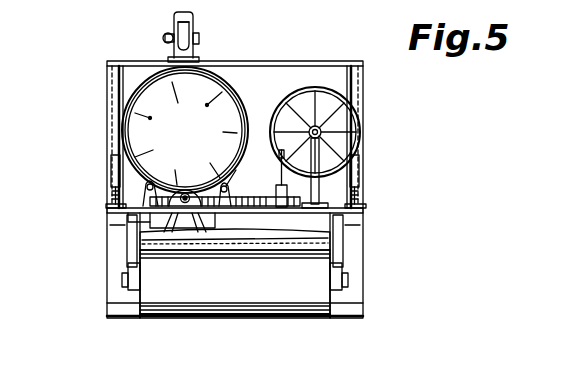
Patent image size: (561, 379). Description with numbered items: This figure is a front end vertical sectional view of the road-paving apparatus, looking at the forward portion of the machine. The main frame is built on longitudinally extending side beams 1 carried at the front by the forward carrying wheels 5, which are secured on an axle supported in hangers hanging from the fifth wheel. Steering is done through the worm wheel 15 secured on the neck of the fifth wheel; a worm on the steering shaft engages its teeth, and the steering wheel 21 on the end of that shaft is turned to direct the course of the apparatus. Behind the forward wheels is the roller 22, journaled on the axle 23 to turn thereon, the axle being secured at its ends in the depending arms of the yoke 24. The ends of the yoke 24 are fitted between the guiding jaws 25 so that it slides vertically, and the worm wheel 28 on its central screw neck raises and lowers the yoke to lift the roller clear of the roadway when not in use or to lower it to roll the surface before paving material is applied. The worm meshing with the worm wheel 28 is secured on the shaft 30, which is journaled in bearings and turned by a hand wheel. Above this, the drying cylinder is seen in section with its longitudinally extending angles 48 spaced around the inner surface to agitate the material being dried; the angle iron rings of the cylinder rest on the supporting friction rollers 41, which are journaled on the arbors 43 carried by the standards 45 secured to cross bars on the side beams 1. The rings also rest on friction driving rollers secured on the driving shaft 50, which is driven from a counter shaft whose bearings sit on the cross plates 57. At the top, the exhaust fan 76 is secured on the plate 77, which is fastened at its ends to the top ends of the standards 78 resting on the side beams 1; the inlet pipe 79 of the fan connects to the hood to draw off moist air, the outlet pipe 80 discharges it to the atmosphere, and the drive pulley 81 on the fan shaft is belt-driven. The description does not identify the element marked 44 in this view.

The side beams 1 is at (112, 197).
The forward carrying wheels 5 is at (112, 312).
The worm wheel 15 is at (297, 200).
The steering wheel 21 is at (361, 133).
The roller 22 is at (303, 320).
The axle 23 is at (122, 285).
The yoke 24 is at (126, 275).
The guiding jaws 25 is at (127, 242).
The worm wheel 28 is at (246, 208).
The shaft 30 is at (225, 194).
The supporting friction rollers 41 is at (230, 196).
The arbors 43 is at (146, 190).
The crank bracket 44 is at (191, 193).
The standards 45 is at (112, 207).
The longitudinally extending angles 48 is at (188, 113).
The driving shaft 50 is at (185, 204).
The cross plates 57 is at (233, 103).
The exhaust fan 76 is at (176, 30).
The plate 77 is at (272, 62).
The standards 78 is at (107, 90).
The inlet pipe 79 is at (163, 38).
The outlet pipe 80 is at (193, 24).
The drive pulley 81 is at (200, 40).